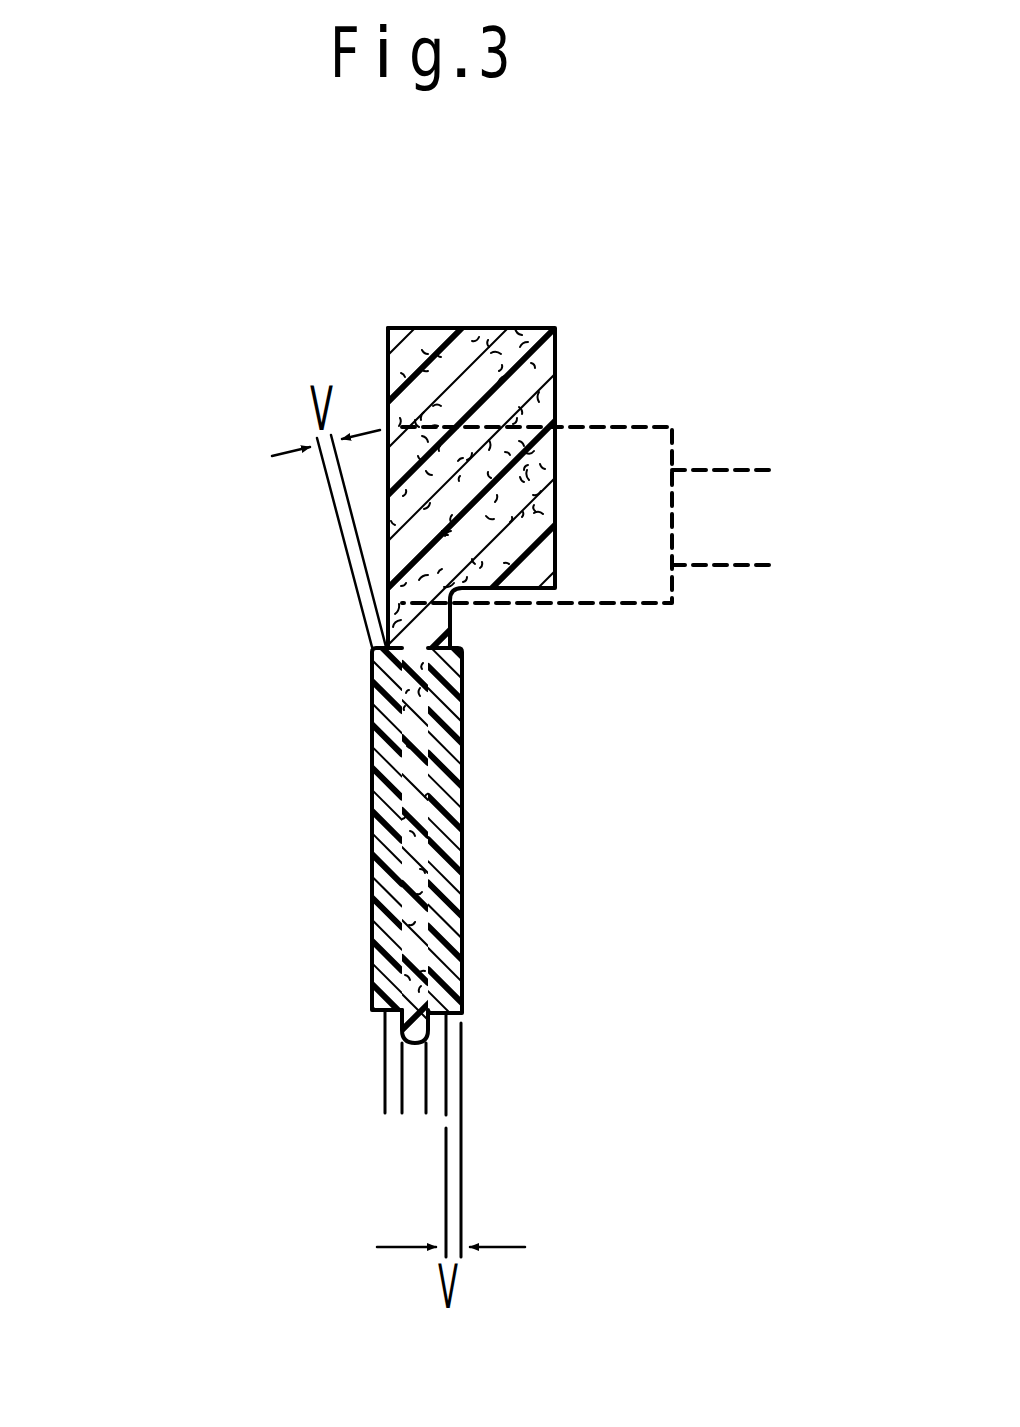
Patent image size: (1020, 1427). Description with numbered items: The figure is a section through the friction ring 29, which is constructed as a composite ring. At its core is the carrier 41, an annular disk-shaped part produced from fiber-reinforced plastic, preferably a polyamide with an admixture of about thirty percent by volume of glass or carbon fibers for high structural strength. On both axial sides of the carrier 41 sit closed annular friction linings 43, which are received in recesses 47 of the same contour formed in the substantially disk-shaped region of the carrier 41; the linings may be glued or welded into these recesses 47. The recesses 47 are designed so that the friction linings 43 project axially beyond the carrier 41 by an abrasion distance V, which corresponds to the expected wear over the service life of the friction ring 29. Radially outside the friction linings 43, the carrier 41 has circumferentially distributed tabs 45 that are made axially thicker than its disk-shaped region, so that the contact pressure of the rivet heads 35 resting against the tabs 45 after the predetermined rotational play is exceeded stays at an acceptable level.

The friction ring 29 is at (298, 598).
The heads of the rivets 35 is at (633, 560).
The carrier 41 is at (417, 1046).
The friction linings 43 is at (372, 857).
The tabs 45 is at (556, 359).
The recesses 47 is at (372, 686).